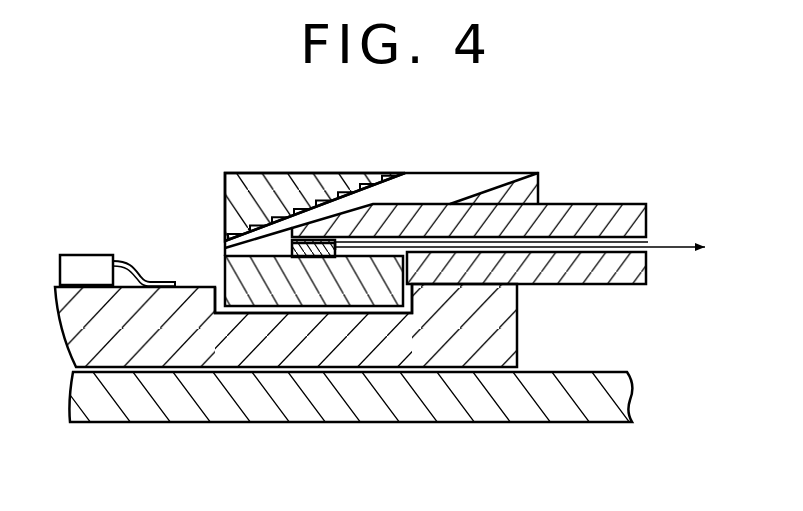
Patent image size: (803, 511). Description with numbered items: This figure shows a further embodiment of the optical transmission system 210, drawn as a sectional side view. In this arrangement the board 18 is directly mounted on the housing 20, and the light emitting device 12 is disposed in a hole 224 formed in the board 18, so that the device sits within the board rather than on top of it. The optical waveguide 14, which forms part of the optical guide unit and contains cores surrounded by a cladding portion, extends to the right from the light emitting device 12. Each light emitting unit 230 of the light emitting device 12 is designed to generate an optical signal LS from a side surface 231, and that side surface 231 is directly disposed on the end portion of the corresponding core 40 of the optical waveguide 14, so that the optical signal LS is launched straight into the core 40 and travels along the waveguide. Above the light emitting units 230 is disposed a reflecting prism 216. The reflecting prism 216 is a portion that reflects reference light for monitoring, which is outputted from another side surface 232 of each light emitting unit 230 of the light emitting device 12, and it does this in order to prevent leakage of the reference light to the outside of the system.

The optical transmission system 210 is at (225, 129).
The reflecting prism 216 is at (282, 197).
The another side surface 232 is at (248, 230).
The light emitting device 12 is at (250, 276).
The optical waveguide 14 is at (572, 186).
The core 40 is at (637, 242).
The optical signal LS is at (672, 248).
The board 18 is at (467, 335).
The housing 20 is at (598, 402).
The hole 224 is at (257, 315).
The light emitting unit 230 is at (298, 257).
The side surface 231 is at (337, 249).